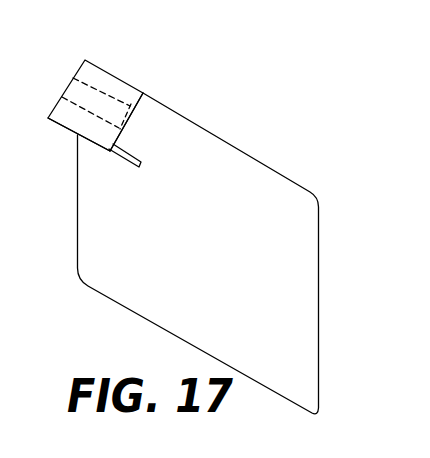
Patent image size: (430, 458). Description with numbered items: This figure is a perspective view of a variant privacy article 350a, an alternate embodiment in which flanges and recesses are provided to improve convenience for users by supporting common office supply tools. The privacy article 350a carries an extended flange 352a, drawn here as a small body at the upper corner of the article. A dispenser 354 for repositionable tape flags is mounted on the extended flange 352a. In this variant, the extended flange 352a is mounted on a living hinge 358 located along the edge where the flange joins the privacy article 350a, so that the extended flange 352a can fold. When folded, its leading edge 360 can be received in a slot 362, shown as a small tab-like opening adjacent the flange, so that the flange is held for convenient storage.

The privacy article 350a is at (243, 138).
The extended flange 352a is at (93, 72).
The dispenser 354 is at (74, 83).
The living hinge 358 is at (142, 92).
The leading edge 360 is at (61, 126).
The slot 362 is at (128, 167).